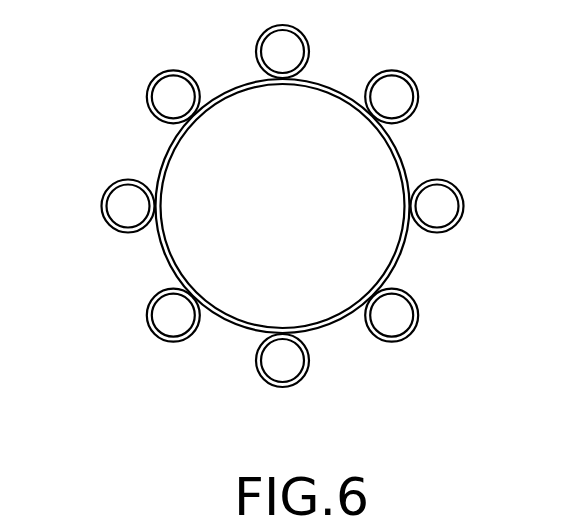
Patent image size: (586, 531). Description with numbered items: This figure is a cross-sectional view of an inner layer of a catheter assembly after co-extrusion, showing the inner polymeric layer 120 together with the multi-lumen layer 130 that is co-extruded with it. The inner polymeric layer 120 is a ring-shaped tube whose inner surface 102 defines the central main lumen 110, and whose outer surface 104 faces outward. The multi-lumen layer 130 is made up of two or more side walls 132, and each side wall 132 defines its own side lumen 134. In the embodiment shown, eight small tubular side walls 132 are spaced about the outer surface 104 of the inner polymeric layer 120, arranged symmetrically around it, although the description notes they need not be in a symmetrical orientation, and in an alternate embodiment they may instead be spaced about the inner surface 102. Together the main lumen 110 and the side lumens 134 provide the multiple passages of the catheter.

The inner wall of body 102 is at (222, 105).
The outer wall of body 104 is at (168, 155).
The body 110 is at (242, 182).
The outer surface / coating 120 is at (402, 155).
The tubular members 130 is at (288, 238).
The tubular member wall 132 is at (123, 235).
The lumen of tubular member 134 is at (128, 208).